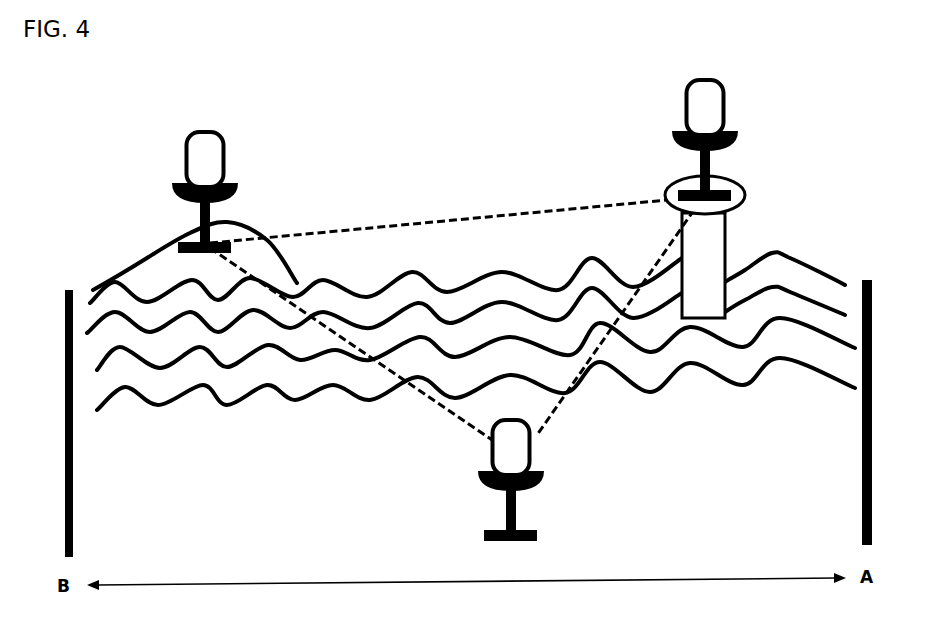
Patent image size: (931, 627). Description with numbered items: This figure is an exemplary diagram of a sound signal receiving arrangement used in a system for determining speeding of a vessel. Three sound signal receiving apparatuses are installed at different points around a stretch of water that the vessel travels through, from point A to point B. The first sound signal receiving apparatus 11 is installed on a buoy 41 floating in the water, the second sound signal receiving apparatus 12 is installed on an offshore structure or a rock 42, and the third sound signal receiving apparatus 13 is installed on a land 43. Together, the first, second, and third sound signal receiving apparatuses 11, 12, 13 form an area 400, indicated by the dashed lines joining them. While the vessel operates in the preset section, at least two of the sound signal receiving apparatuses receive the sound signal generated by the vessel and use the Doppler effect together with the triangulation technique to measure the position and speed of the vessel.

The first sound signal receiving apparatus 11 is at (730, 132).
The second sound signal receiving apparatus 12 is at (182, 183).
The third sound signal receiving apparatus 13 is at (530, 532).
The buoy 41 is at (725, 248).
The offshore structure or rock 42 is at (167, 277).
The land 43 is at (402, 532).
The area 400 is at (490, 228).